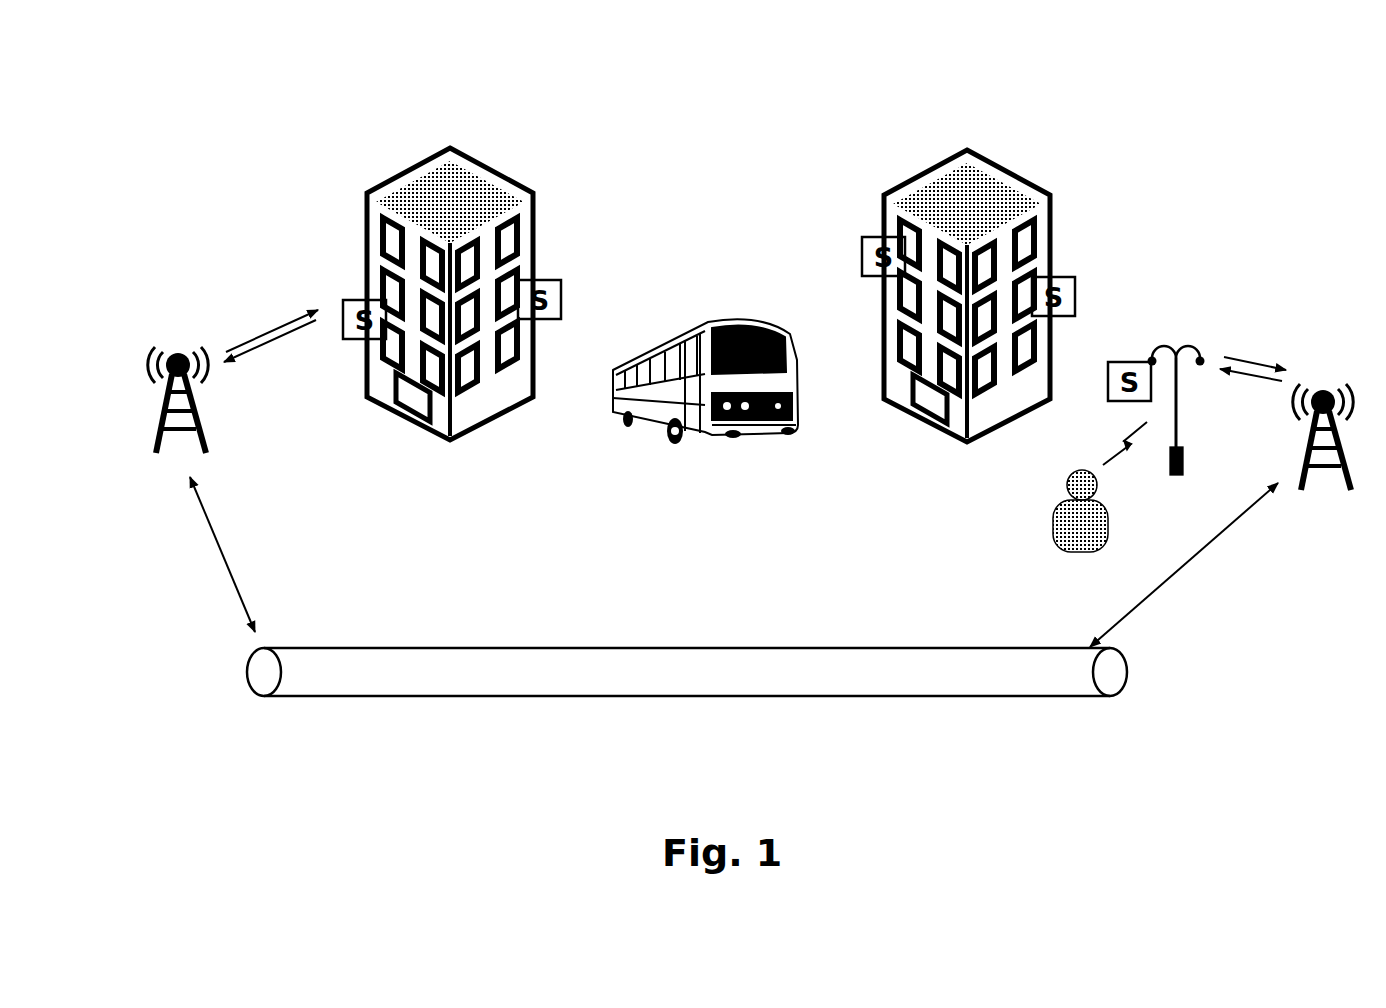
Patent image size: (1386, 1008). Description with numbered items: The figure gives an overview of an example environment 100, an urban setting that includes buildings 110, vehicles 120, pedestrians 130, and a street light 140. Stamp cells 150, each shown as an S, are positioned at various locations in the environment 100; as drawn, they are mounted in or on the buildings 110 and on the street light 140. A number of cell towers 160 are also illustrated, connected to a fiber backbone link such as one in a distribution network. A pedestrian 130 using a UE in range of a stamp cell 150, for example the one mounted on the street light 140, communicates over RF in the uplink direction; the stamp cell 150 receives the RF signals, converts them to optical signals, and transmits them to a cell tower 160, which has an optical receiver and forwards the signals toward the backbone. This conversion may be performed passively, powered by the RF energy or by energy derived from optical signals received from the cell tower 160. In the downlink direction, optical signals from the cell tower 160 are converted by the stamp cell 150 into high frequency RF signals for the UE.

The environment 100 is at (208, 82).
The buildings 110 is at (514, 168).
The vehicles 120 is at (740, 312).
The pedestrians 130 is at (467, 698).
The street light 140 is at (1198, 340).
The stamp cells 150 is at (1075, 275).
The cell towers 160 is at (177, 343).